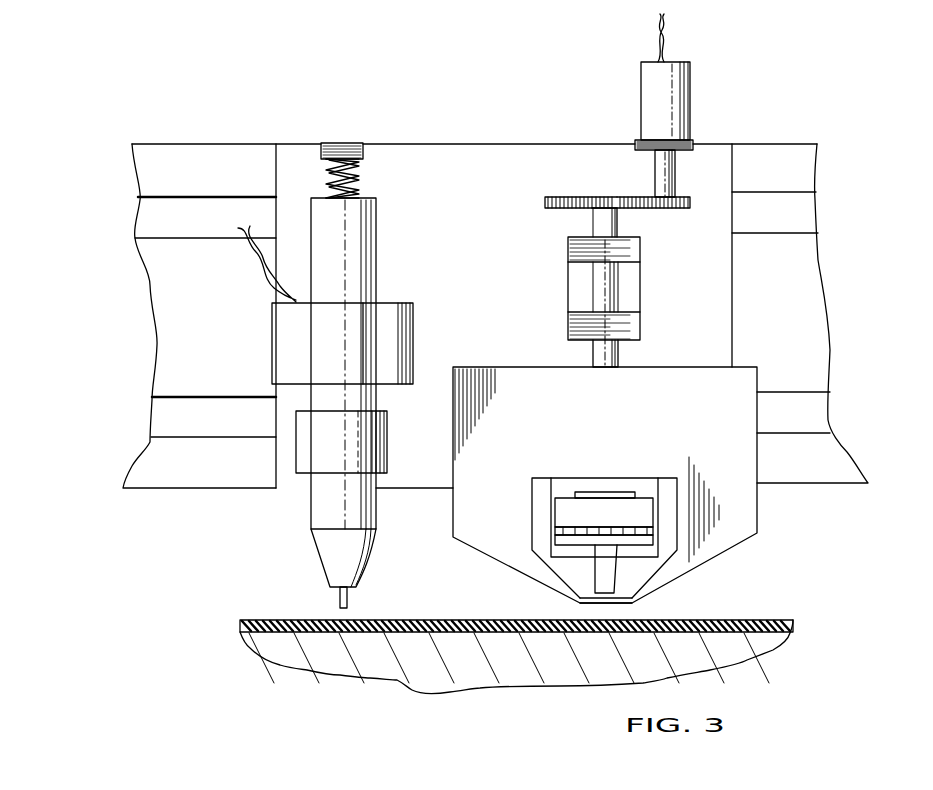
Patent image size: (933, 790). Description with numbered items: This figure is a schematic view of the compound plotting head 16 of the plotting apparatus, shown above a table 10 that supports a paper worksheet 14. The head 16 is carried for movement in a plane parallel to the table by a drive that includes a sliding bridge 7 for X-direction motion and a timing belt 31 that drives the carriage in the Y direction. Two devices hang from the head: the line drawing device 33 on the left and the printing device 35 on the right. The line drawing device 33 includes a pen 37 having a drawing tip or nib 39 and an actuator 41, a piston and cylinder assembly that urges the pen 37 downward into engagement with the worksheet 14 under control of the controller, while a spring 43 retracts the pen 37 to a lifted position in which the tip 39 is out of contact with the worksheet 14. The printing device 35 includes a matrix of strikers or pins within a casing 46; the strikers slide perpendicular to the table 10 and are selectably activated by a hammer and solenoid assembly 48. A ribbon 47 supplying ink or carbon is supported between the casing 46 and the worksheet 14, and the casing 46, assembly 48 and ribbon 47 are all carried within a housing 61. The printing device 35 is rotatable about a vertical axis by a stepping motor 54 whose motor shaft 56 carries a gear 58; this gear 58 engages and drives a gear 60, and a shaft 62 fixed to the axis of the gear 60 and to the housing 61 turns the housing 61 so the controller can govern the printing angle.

The sliding bridge 7 is at (213, 145).
The table 10 is at (318, 655).
The paper worksheet 14 is at (750, 620).
The compound plotting head 16 is at (435, 127).
The timing belt 31 is at (172, 255).
The line drawing device 33 is at (283, 412).
The printing device 35 is at (622, 470).
The pen 37 is at (304, 558).
The drawing tip or nib 39 is at (348, 600).
The actuator 41 is at (393, 347).
The spring 43 is at (376, 192).
The casing 46 is at (615, 568).
The ribbon 47 is at (583, 590).
The hammer and solenoid assembly 48 is at (547, 514).
The stepping motor 54 is at (690, 93).
The motor shaft 56 is at (676, 175).
The gear 58 is at (683, 210).
The gear 60 is at (553, 210).
The housing 61 is at (733, 497).
The shaft 62 is at (618, 288).